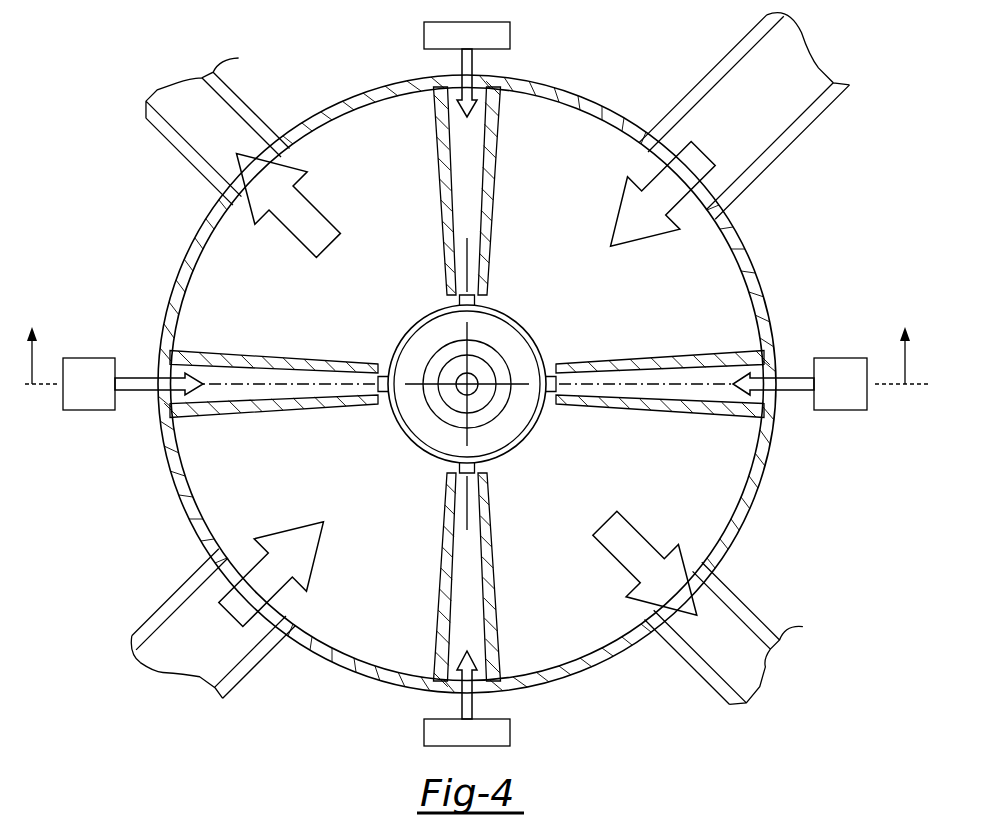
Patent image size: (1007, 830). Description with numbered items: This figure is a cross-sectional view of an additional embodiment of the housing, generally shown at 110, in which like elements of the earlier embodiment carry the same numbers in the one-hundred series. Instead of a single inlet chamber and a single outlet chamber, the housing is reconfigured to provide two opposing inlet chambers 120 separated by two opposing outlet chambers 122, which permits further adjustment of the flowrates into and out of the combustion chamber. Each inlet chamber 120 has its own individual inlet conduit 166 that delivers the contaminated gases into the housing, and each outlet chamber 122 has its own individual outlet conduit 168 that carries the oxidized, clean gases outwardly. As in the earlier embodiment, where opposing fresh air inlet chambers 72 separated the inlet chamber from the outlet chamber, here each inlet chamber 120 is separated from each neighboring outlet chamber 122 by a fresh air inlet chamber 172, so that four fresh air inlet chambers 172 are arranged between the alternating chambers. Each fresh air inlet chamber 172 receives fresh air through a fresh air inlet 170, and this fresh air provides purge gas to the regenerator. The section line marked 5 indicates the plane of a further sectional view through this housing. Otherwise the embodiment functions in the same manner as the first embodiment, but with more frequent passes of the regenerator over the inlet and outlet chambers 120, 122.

The additional embodiment 110 is at (112, 176).
The inlet chamber 120 is at (584, 295).
The outlet chamber 122 is at (391, 295).
The fresh air inlet chamber 72 is at (260, 375).
The inlet conduit 166 is at (786, 102).
The outlet conduit 168 is at (218, 124).
The fresh air inlet 170 is at (472, 62).
The fresh air inlet chamber 172 is at (468, 195).
The section line 5- 5 is at (473, 339).